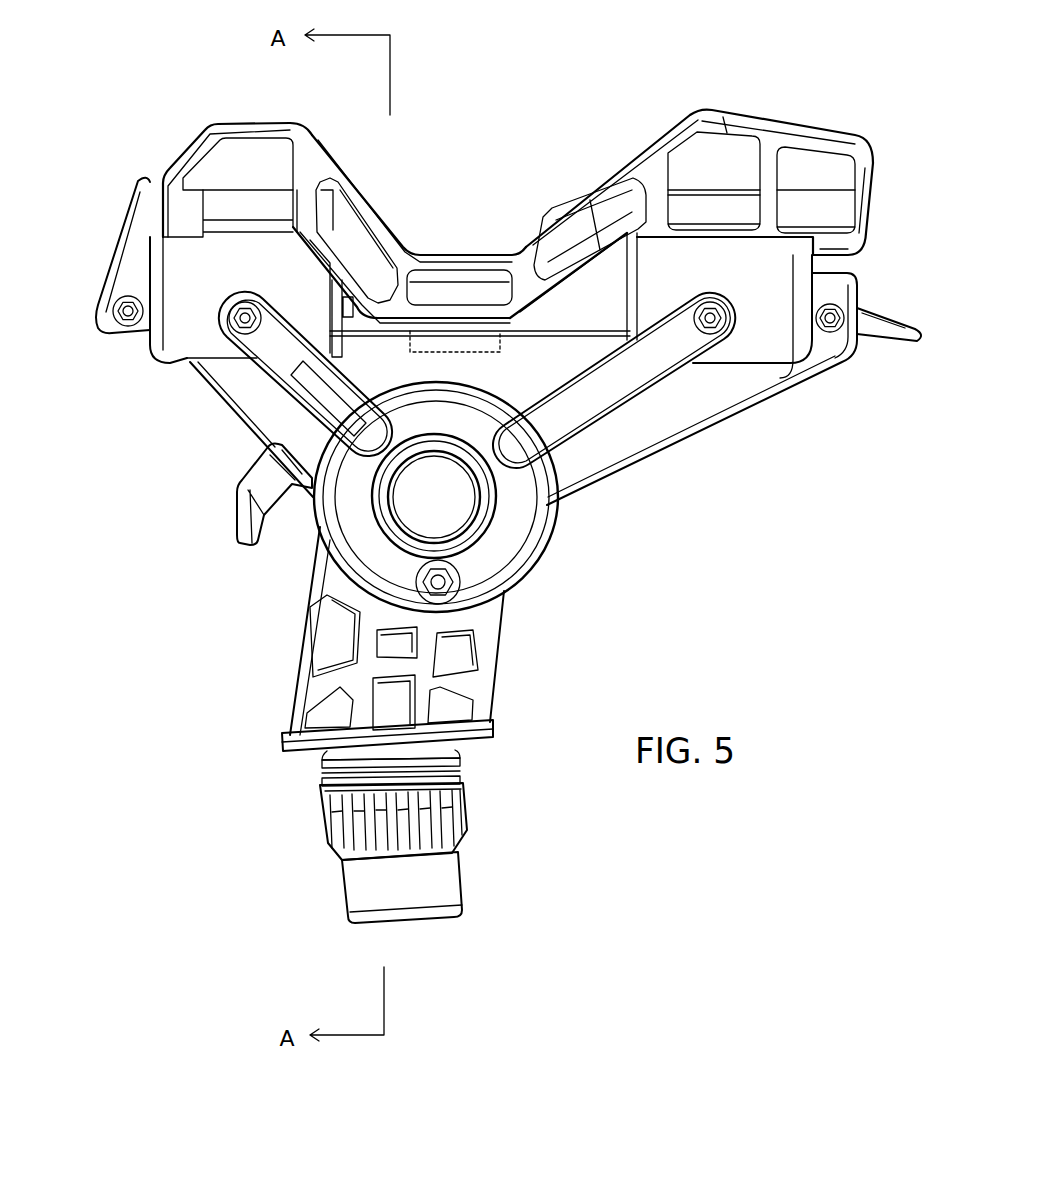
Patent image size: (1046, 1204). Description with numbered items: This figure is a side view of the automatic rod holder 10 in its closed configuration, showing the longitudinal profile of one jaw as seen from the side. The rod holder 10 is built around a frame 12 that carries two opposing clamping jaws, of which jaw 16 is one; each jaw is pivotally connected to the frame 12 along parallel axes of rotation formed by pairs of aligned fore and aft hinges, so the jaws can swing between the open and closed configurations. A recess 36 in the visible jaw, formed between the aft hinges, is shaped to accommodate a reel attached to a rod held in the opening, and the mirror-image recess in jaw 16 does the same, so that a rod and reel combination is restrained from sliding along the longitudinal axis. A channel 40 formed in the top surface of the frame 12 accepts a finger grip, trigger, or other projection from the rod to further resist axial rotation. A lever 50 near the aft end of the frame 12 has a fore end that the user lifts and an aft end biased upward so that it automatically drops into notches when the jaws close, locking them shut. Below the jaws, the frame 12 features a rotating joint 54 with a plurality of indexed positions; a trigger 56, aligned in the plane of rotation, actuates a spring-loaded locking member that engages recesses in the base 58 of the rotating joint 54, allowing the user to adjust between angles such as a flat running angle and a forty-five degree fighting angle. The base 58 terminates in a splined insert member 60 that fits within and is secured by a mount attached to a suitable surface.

The rod holder 10 is at (142, 617).
The frame 12 is at (227, 397).
The clamping jaw 16 is at (194, 136).
The recess 36 is at (375, 208).
The channel 40 is at (477, 352).
The lever 50 is at (884, 313).
The rotating joint 54 is at (544, 543).
The trigger 56 is at (233, 510).
The base 58 is at (490, 662).
The splined insert member 60 is at (461, 843).